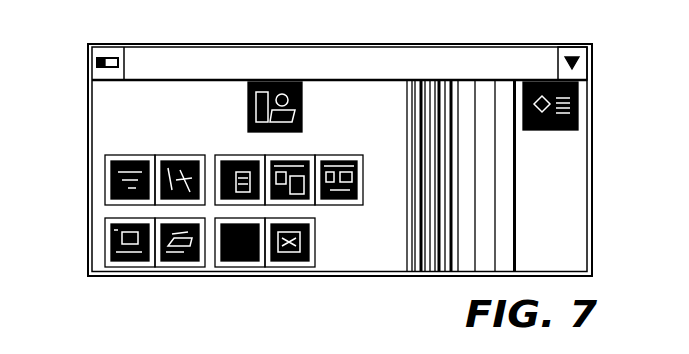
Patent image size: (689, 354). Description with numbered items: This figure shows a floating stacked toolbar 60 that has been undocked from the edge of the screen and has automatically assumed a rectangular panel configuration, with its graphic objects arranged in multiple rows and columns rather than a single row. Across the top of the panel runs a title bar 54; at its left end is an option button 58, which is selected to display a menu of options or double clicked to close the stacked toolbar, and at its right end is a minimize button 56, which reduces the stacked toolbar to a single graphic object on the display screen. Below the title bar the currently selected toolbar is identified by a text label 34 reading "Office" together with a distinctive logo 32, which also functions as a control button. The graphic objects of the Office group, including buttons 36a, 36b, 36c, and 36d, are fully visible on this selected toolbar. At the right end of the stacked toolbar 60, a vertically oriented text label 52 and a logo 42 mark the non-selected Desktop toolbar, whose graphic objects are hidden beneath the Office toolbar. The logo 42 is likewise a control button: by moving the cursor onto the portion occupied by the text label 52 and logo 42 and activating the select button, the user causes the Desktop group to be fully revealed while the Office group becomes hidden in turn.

The stacked toolbar 60 is at (92, 282).
The title bar 54 is at (184, 56).
The option button 58 is at (96, 62).
The minimize button 56 is at (589, 56).
The text label 34 is at (104, 98).
The logo 32 is at (303, 108).
The button 36a is at (237, 260).
The button 36b is at (186, 259).
The button 36c is at (327, 158).
The button 36d is at (108, 196).
The text label 52 is at (567, 222).
The logo 42 is at (584, 108).